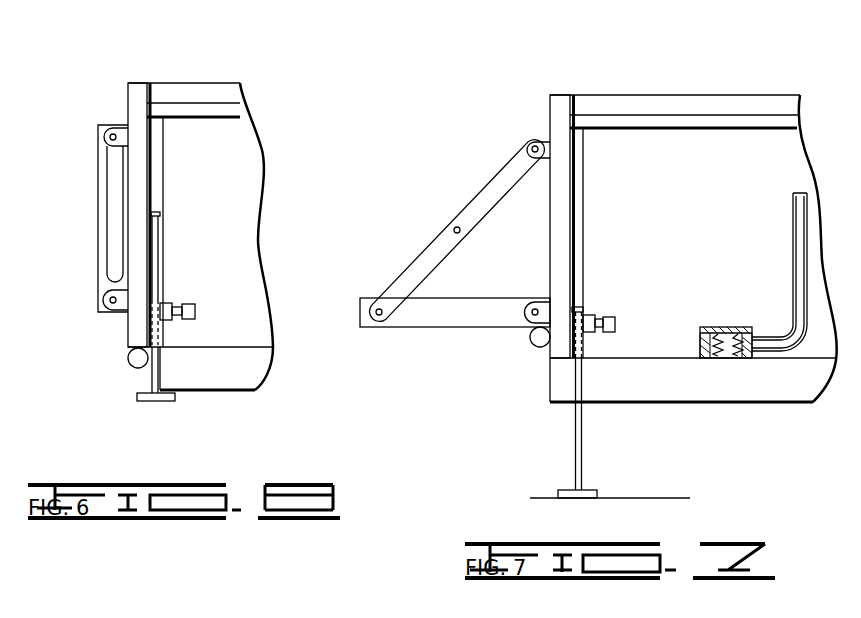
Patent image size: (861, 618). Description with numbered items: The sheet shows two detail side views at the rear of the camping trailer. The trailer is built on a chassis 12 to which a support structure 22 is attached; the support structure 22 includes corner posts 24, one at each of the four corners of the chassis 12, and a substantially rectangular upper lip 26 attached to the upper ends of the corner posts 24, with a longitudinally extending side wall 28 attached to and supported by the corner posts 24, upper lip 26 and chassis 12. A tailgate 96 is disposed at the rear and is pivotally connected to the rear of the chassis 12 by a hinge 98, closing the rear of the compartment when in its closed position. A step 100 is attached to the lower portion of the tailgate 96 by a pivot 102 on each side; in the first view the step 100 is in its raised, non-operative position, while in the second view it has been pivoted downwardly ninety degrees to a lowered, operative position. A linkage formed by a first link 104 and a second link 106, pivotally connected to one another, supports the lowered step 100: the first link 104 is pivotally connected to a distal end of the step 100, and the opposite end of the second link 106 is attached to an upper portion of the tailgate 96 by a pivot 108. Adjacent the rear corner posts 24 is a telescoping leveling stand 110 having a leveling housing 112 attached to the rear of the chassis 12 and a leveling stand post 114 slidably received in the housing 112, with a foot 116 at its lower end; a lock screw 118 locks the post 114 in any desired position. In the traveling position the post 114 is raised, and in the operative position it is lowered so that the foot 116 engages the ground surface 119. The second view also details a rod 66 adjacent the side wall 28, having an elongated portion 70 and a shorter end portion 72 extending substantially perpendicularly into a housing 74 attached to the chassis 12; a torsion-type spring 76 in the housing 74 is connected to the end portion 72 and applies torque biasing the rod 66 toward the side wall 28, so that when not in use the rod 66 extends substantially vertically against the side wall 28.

In FIG. 6, the chassis 12 is at (212, 371).
In FIG. 7, the chassis 12 is at (611, 383).
In FIG. 6, the support structure 22 is at (235, 204).
In FIG. 7, the support structure 22 is at (693, 248).
In FIG. 6, the corner post 24 is at (158, 132).
In FIG. 7, the corner post 24 is at (578, 182).
In FIG. 6, the upper lip 26 is at (222, 119).
In FIG. 7, the upper lip 26 is at (773, 130).
In FIG. 6, the side wall 28 is at (223, 191).
In FIG. 7, the side wall 28 is at (778, 220).
In FIG. 7, the rod 66 is at (739, 312).
In FIG. 7, the elongated portion 70 is at (793, 263).
In FIG. 7, the end portion 72 is at (728, 358).
In FIG. 7, the housing 74 is at (717, 327).
In FIG. 7, the spring 76 is at (735, 327).
In FIG. 6, the tailgate 96 is at (135, 98).
In FIG. 7, the tailgate 96 is at (558, 106).
In FIG. 6, the hinge 98 is at (128, 358).
In FIG. 7, the hinge 98 is at (530, 345).
In FIG. 6, the step 100 is at (104, 283).
In FIG. 7, the step 100 is at (438, 310).
In FIG. 6, the pivot 102 is at (107, 300).
In FIG. 7, the pivot 102 is at (532, 300).
In FIG. 7, the first link 104 is at (417, 272).
In FIG. 7, the second link 106 is at (490, 183).
In FIG. 7, the pivot 108 is at (530, 142).
In FIG. 6, the telescoping leveling stand 110 is at (194, 320).
In FIG. 7, the telescoping leveling stand 110 is at (516, 402).
In FIG. 6, the leveling housing 112 is at (163, 297).
In FIG. 7, the leveling housing 112 is at (577, 337).
In FIG. 6, the leveling stand post 114 is at (153, 382).
In FIG. 7, the leveling stand post 114 is at (575, 448).
In FIG. 6, the foot 116 is at (160, 401).
In FIG. 7, the foot 116 is at (570, 490).
In FIG. 6, the lock screw 118 is at (193, 310).
In FIG. 7, the lock screw 118 is at (614, 325).
In FIG. 7, the ground surface 119 is at (643, 498).